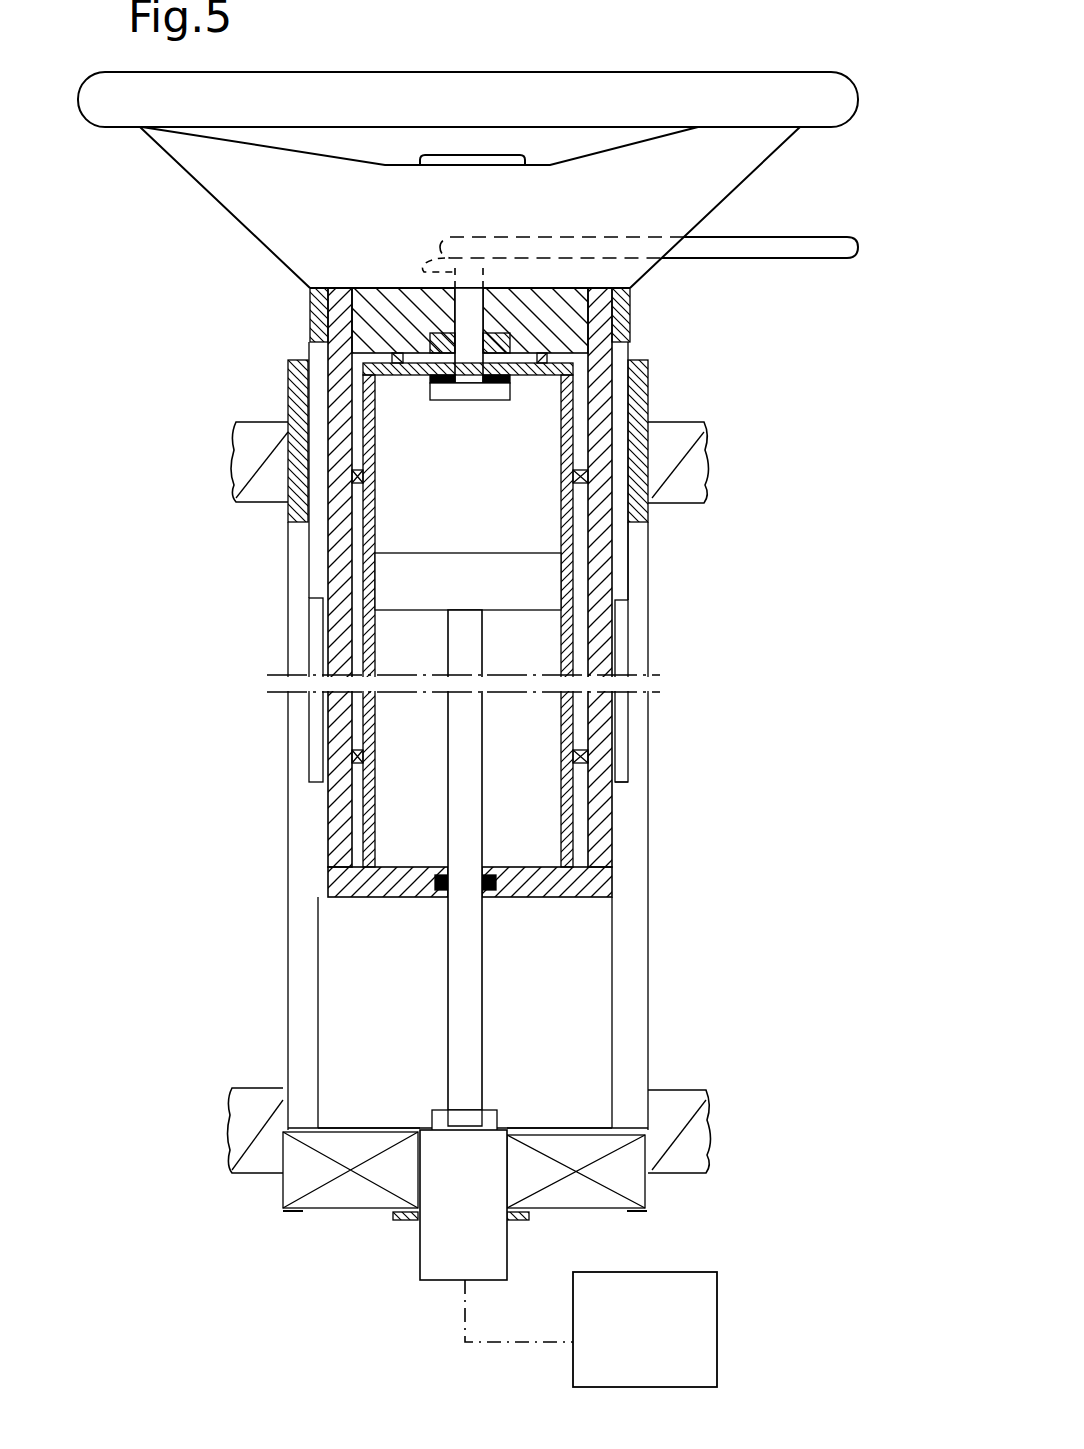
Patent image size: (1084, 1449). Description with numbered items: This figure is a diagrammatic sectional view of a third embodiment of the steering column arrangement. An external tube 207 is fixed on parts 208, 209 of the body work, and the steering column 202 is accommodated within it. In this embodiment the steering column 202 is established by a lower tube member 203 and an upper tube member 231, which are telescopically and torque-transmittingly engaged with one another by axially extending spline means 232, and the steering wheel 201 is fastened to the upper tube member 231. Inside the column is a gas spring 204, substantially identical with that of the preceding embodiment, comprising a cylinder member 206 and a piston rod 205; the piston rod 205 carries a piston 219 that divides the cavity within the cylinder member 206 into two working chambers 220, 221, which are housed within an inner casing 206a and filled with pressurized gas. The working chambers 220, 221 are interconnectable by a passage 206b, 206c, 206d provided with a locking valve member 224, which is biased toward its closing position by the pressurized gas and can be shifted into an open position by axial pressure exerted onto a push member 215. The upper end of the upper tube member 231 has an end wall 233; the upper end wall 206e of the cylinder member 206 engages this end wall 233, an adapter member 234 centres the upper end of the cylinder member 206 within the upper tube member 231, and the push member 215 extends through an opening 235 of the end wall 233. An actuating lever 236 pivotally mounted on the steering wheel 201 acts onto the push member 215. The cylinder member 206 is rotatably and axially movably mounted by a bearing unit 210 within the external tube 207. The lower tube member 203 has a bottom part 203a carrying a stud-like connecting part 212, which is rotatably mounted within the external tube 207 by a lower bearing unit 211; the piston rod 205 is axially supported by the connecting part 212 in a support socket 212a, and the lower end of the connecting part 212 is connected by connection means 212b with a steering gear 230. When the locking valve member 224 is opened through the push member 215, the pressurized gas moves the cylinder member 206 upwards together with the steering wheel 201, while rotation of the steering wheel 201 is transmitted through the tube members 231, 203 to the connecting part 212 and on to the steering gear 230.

The steering wheel 201 is at (610, 96).
The actuating lever 236 is at (795, 246).
The opening 235 is at (429, 259).
The adapter member 234 is at (318, 322).
The upper end wall 233 is at (560, 290).
The upper end wall of the cylinder member 206e is at (380, 318).
The push member 215 is at (470, 325).
The passage 206b is at (452, 388).
The locking valve member 224 is at (492, 398).
The passage 206c is at (570, 372).
The inner casing 206a is at (567, 405).
The cylinder member 206 is at (598, 630).
The passage 206d is at (545, 805).
The piston 219 is at (447, 578).
The piston rod 205 is at (470, 985).
The working chamber 220 is at (469, 509).
The working chamber 221 is at (534, 754).
The bearing unit 210 is at (300, 400).
The upper tube member 231 is at (630, 532).
The external tube 207 is at (650, 908).
The spline means 232 is at (630, 720).
The gas spring 204 is at (616, 579).
The steering column 202 is at (624, 775).
The lower tube member 203 is at (614, 1058).
The bottom part 203a is at (385, 1128).
The part of the body work 208 is at (262, 485).
The part of the body work 209 is at (250, 1100).
The lower bearing unit 211 is at (342, 1195).
The support socket 212a is at (495, 1112).
The stud-like connecting part 212 is at (488, 1250).
The connection means 212b is at (465, 1328).
The steering gear 230 is at (660, 1292).